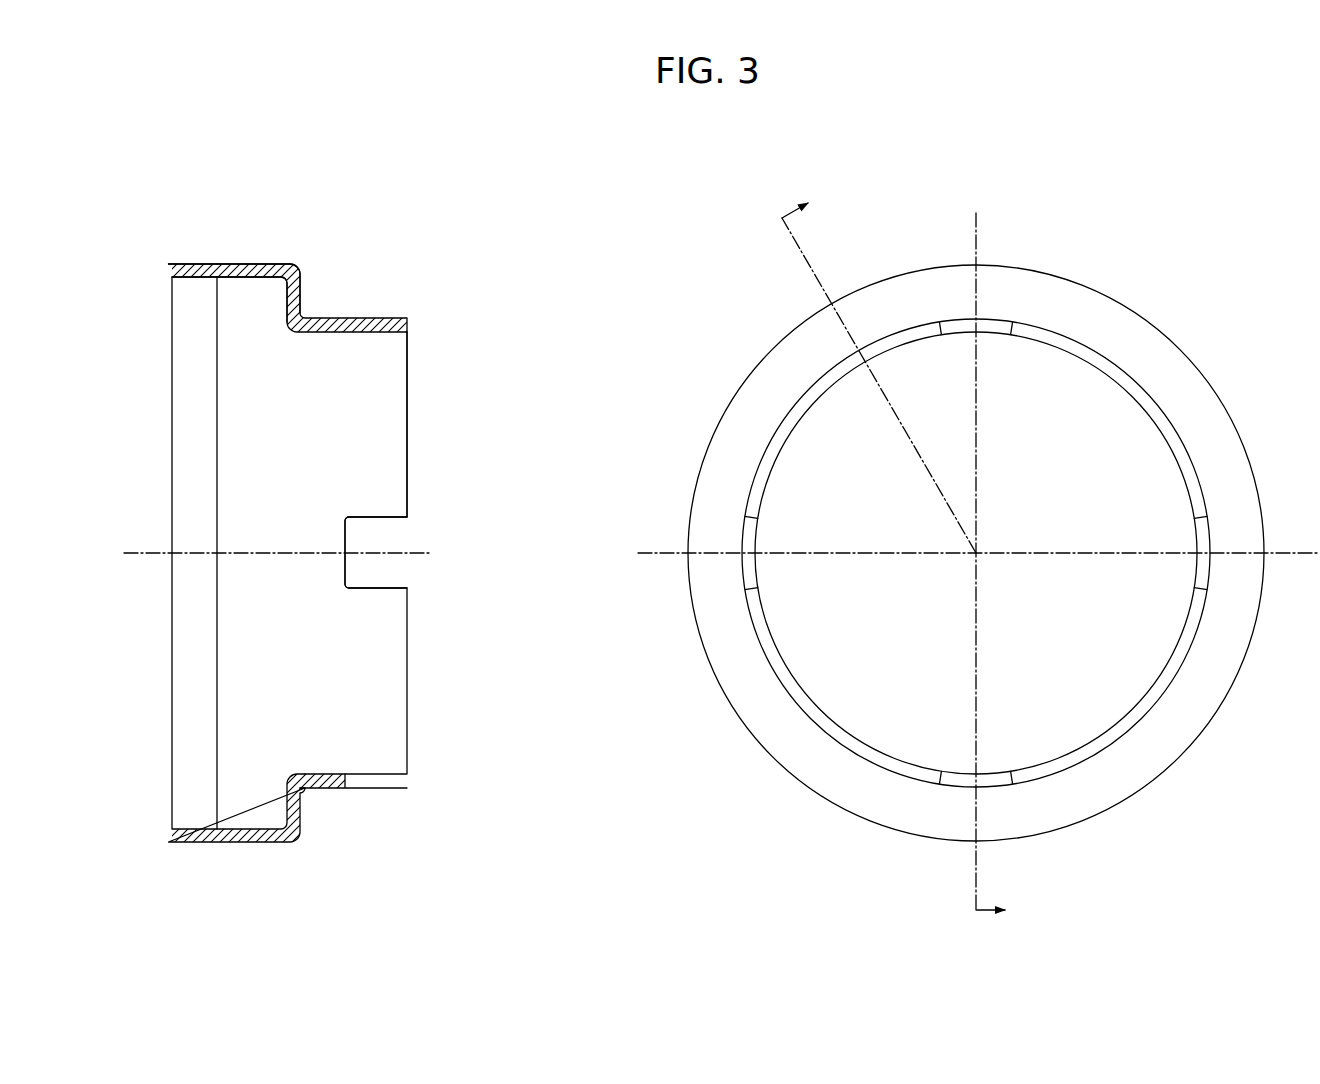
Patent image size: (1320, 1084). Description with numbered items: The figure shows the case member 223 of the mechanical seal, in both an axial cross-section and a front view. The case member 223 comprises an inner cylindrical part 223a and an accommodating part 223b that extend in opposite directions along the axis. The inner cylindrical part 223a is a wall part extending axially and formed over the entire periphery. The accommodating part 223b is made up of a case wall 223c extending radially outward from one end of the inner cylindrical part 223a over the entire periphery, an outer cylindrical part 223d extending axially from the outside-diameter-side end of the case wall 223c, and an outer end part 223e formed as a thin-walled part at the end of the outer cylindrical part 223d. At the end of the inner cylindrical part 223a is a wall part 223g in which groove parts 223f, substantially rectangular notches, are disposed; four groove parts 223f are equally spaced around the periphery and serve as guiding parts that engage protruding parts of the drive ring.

The case member 223 is at (1122, 272).
The inner cylindrical part 223a is at (322, 318).
The accommodating part 223b is at (375, 165).
The case wall 223c is at (300, 300).
The outer cylindrical part 223d is at (253, 264).
The outer end part 223e is at (190, 264).
The groove part 223f is at (380, 535).
The wall part 223g is at (388, 418).